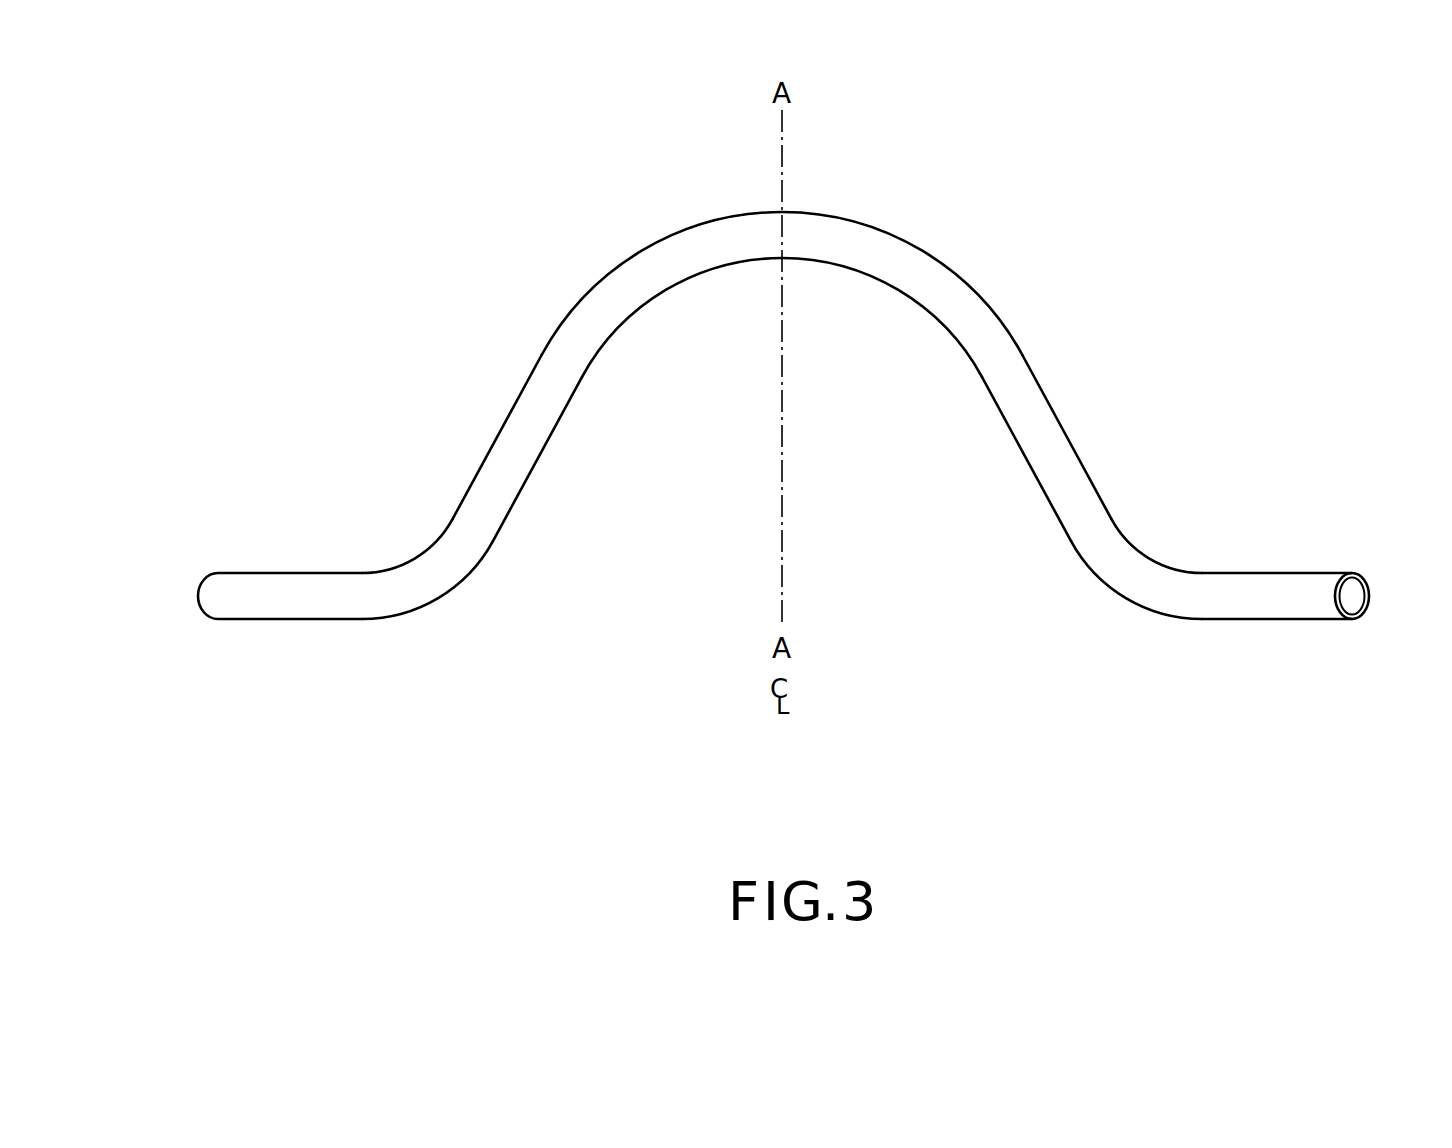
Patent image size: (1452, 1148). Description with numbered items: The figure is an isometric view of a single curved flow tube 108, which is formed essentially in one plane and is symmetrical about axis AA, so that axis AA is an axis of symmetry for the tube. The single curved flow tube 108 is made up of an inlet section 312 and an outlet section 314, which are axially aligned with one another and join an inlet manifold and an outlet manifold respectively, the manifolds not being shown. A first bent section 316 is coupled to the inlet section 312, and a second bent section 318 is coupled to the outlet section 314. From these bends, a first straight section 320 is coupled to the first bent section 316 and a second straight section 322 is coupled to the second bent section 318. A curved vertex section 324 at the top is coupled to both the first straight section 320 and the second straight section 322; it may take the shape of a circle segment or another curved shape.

The single curved flow tube 108 is at (468, 262).
The inlet section 312 is at (265, 620).
The outlet section 314 is at (1308, 621).
The first bent section 316 is at (450, 592).
The second bent section 318 is at (1113, 594).
The first straight section 320 is at (493, 440).
The second straight section 322 is at (1048, 402).
The curved vertex section 324 is at (840, 213).